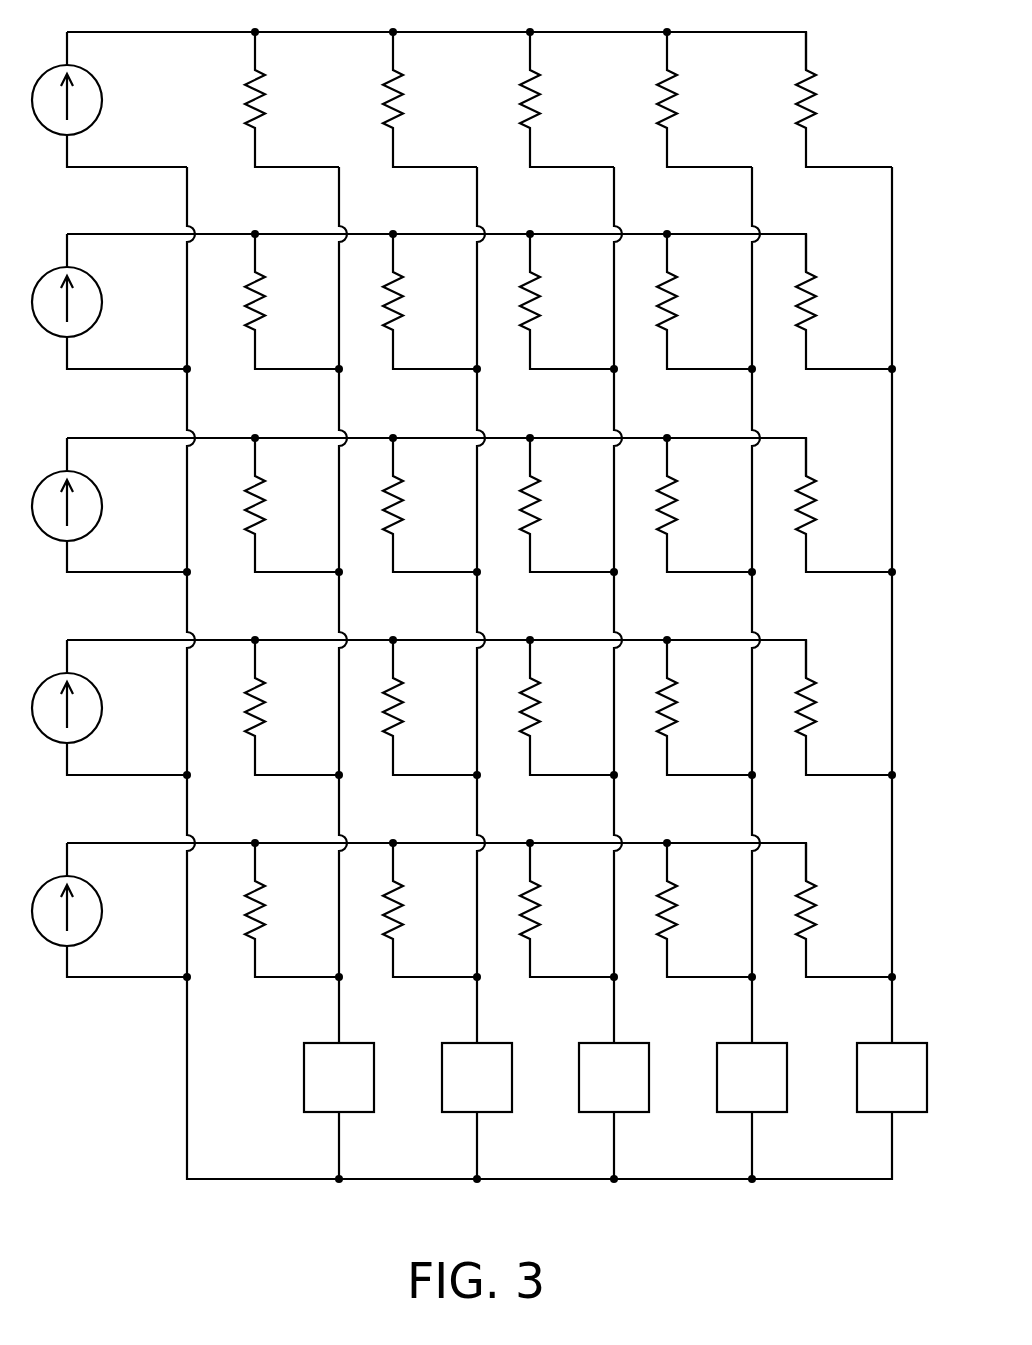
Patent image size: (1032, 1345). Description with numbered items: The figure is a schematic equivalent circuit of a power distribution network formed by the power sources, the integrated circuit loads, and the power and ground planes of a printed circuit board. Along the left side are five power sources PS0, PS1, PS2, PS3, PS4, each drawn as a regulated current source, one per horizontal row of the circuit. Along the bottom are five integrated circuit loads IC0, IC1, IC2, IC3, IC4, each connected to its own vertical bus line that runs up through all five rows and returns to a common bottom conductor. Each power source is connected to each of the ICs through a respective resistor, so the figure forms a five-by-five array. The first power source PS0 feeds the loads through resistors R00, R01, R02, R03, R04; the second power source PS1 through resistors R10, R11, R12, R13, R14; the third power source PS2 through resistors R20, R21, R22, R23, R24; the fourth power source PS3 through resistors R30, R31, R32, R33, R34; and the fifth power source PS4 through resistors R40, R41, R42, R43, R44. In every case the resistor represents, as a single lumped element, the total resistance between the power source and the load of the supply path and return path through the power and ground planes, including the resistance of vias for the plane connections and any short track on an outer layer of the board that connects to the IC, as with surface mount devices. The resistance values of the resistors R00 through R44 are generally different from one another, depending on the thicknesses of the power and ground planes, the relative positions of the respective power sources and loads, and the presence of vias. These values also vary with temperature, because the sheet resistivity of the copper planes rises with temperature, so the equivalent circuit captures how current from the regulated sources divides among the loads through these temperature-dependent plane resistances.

The power source PS0 is at (109, 99).
The power source PS1 is at (109, 301).
The power source PS2 is at (109, 505).
The power source PS3 is at (109, 707).
The power source PS4 is at (109, 910).
The resistor R00 is at (292, 99).
The resistor R01 is at (430, 99).
The resistor R02 is at (567, 99).
The resistor R03 is at (704, 99).
The resistor R04 is at (844, 99).
The resistor R10 is at (292, 301).
The resistor R11 is at (430, 301).
The resistor R12 is at (567, 301).
The resistor R13 is at (704, 301).
The resistor R14 is at (844, 301).
The resistor R20 is at (292, 505).
The resistor R21 is at (430, 505).
The resistor R22 is at (567, 505).
The resistor R23 is at (704, 505).
The resistor R24 is at (844, 505).
The resistor R30 is at (292, 707).
The resistor R31 is at (430, 707).
The resistor R32 is at (567, 707).
The resistor R33 is at (704, 707).
The resistor R34 is at (844, 707).
The resistor R40 is at (292, 910).
The resistor R41 is at (430, 910).
The resistor R42 is at (567, 910).
The resistor R43 is at (704, 910).
The resistor R44 is at (844, 910).
The integrated circuit load IC0 is at (339, 1077).
The integrated circuit load IC1 is at (477, 1077).
The integrated circuit load IC2 is at (614, 1077).
The integrated circuit load IC3 is at (752, 1077).
The integrated circuit load IC4 is at (892, 1077).